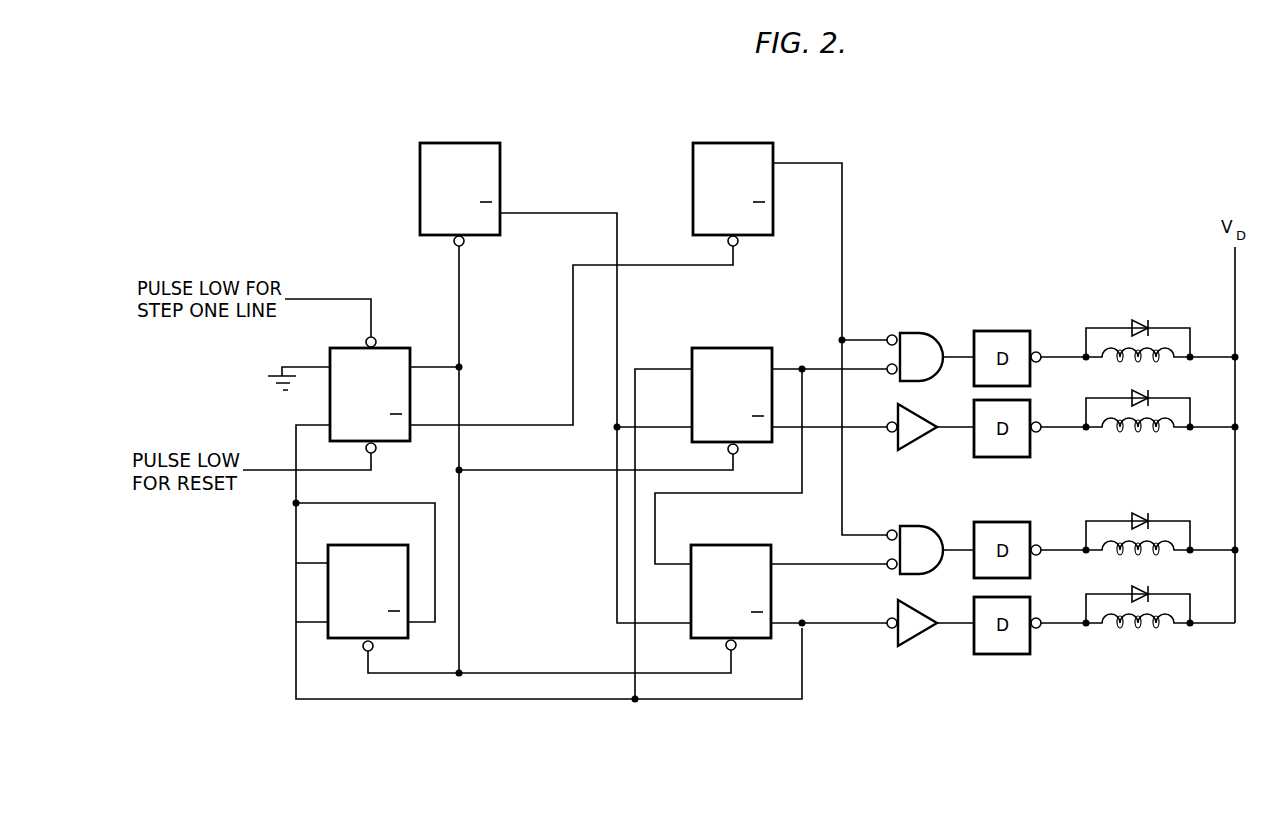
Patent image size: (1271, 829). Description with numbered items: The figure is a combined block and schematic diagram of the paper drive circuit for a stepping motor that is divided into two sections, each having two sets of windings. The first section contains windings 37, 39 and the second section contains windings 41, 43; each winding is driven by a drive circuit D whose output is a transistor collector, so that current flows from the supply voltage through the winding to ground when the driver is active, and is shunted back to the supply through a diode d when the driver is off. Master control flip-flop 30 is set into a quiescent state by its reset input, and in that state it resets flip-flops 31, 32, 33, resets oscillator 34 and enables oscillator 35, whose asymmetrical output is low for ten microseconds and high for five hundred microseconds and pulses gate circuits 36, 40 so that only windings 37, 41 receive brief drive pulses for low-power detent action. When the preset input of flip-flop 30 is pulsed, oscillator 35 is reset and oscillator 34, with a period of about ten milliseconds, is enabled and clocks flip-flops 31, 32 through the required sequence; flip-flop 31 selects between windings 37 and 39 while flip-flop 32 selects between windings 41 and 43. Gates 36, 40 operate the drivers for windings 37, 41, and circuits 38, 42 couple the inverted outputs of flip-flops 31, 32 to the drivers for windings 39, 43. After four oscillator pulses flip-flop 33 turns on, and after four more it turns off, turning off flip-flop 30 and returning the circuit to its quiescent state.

The master control flip-flop 30 is at (400, 348).
The flip-flop 31 is at (758, 348).
The flip-flop 32 is at (756, 545).
The flip-flop 33 is at (390, 545).
The oscillator 34 is at (495, 143).
The oscillator 35 is at (768, 143).
The gate circuit 36 is at (920, 333).
The winding 37 is at (1158, 360).
The circuit 38 is at (915, 440).
The winding 39 is at (1152, 430).
The gate circuit 40 is at (925, 526).
The winding 41 is at (1158, 553).
The circuit 42 is at (912, 637).
The winding 43 is at (1155, 626).